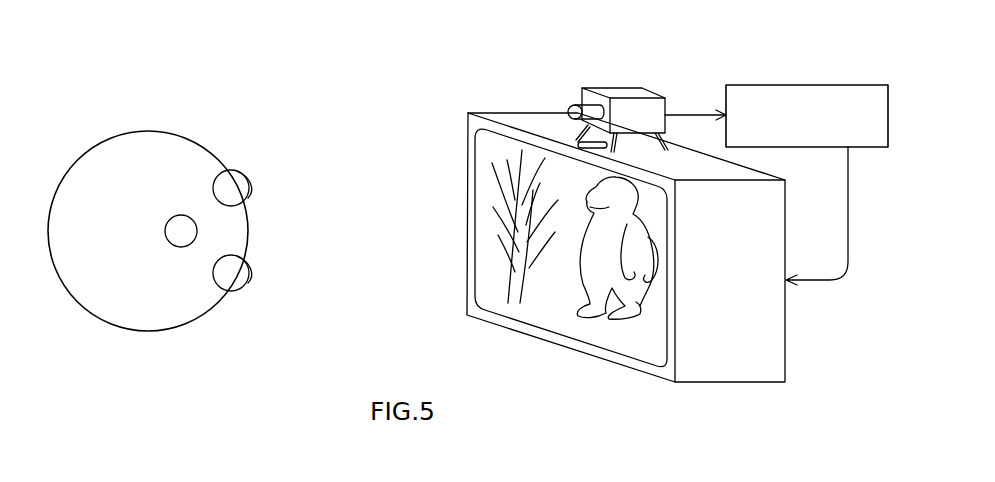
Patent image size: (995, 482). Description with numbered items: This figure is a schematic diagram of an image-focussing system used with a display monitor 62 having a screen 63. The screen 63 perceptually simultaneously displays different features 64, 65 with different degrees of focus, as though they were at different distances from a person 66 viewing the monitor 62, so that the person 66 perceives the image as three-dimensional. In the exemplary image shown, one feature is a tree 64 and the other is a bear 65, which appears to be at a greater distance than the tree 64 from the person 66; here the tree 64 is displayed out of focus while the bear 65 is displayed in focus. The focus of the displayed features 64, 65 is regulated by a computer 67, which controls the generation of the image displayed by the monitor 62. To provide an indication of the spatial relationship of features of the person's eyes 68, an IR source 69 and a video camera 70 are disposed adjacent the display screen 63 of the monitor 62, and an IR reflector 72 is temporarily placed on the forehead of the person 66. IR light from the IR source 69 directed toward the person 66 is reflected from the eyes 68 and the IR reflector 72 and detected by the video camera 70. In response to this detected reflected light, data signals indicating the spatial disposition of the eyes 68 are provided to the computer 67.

The display monitor 62 is at (708, 373).
The screen 63 is at (483, 140).
The tree 64 is at (500, 217).
The bear 65 is at (640, 298).
The person 66 is at (112, 135).
The computer 67 is at (867, 148).
The eyes 68 is at (237, 177).
The IR source 69 is at (643, 148).
The video camera 70 is at (620, 92).
The IR reflector 72 is at (170, 238).